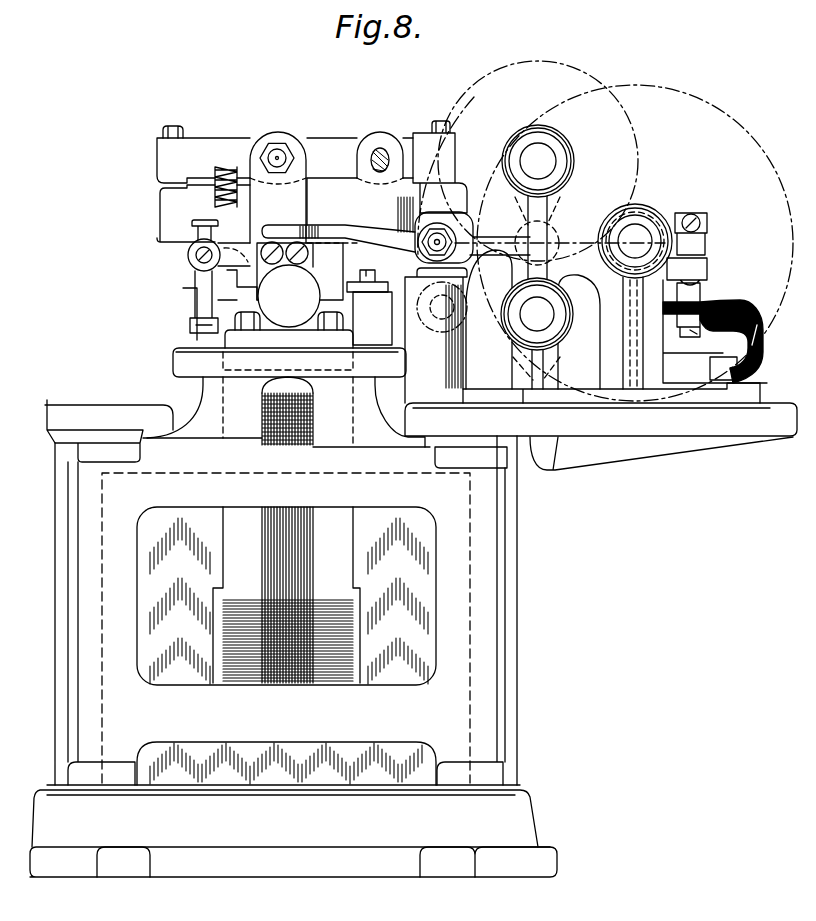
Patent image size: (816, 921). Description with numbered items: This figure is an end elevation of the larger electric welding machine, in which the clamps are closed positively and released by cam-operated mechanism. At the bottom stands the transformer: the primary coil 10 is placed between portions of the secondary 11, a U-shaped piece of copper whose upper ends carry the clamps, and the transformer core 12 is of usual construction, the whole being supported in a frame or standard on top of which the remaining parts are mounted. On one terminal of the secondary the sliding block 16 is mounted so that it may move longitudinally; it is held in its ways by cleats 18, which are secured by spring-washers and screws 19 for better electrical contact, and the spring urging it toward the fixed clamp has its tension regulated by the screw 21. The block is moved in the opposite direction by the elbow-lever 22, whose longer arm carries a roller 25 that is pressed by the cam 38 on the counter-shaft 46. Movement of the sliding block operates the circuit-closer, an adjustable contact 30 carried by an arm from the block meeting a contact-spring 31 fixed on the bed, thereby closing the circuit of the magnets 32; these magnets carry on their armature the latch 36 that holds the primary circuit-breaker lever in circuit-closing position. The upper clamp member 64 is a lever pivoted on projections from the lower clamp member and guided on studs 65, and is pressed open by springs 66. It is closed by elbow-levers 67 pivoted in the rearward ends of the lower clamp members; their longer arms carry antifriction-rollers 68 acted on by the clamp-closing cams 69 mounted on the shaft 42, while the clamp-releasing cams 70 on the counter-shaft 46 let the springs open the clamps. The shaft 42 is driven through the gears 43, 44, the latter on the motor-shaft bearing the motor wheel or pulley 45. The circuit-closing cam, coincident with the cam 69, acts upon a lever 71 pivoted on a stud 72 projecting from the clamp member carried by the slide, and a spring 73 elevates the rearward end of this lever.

The primary coil 10 is at (275, 523).
The secondary 11 is at (345, 527).
The transformer core 12 is at (387, 673).
The sliding block 16 is at (300, 271).
The cleats 18 is at (353, 297).
The spring-washers and screws 19 is at (381, 293).
The tension-regulating screw 21 is at (289, 296).
The elbow-lever 22 is at (332, 228).
The roller 25 is at (435, 340).
The adjustable contact 30 is at (190, 256).
The contact-spring 31 is at (196, 281).
The magnets 32 is at (750, 322).
The latch 36 is at (690, 313).
The cam 38 is at (518, 325).
The shaft 42 is at (538, 161).
The gear 43 is at (577, 75).
The gear 44 is at (643, 227).
The motor wheel or pulley 45 is at (712, 108).
The counter-shaft 46 is at (537, 314).
The upper clamp member 64 is at (203, 148).
The studs 65 is at (380, 150).
The springs 66 is at (220, 176).
The elbow-levers 67 is at (440, 183).
The antifriction-rollers 68 is at (550, 232).
The clamp-closing cams 69 is at (520, 200).
The clamp-releasing cams 70 is at (548, 354).
The lever 71 is at (500, 244).
The stud 72 is at (419, 235).
The spring 73 is at (422, 216).